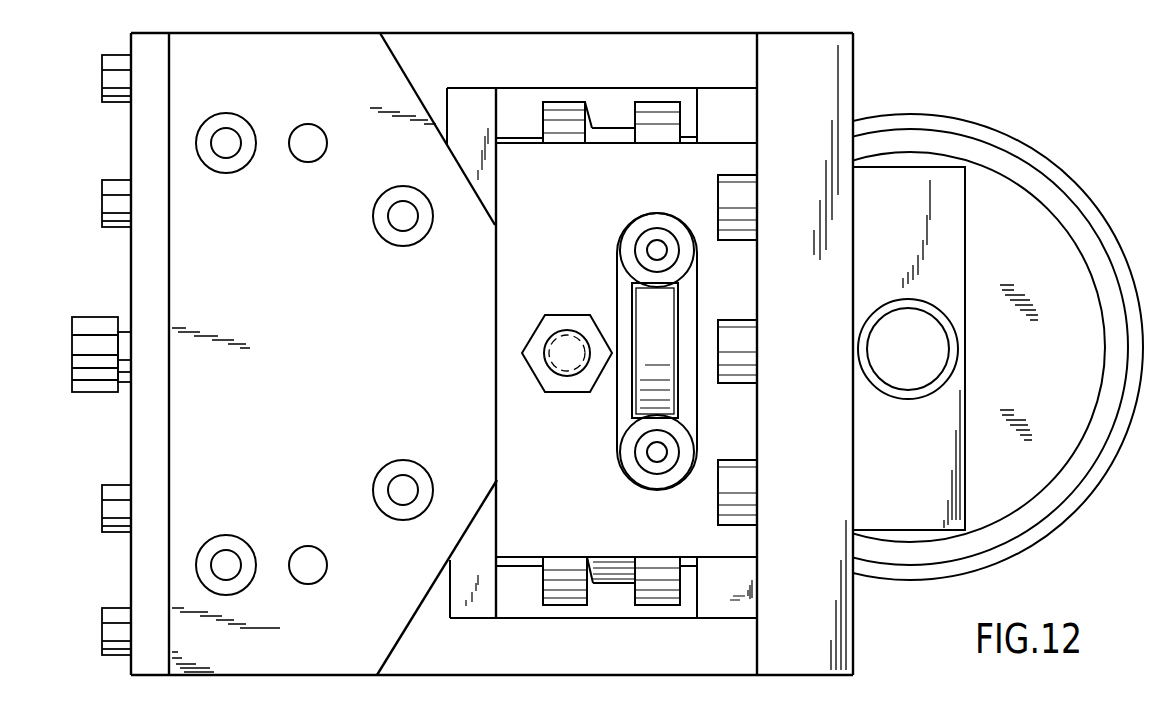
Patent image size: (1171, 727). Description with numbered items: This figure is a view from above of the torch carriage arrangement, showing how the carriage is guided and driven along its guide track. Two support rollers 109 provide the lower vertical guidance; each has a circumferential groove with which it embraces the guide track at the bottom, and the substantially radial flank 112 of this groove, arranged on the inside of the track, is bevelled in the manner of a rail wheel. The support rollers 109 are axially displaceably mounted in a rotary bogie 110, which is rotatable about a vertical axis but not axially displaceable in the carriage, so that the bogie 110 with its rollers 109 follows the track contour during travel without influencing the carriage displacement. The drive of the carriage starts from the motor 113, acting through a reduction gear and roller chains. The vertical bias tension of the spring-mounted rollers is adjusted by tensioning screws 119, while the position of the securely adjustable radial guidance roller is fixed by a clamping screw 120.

The support rollers 109 is at (658, 113).
The rotary bogie 110 is at (473, 106).
The radial flank 112 is at (591, 127).
The motor 113 is at (1030, 205).
The tensioning screws 119 is at (668, 446).
The clamping screw 120 is at (537, 370).